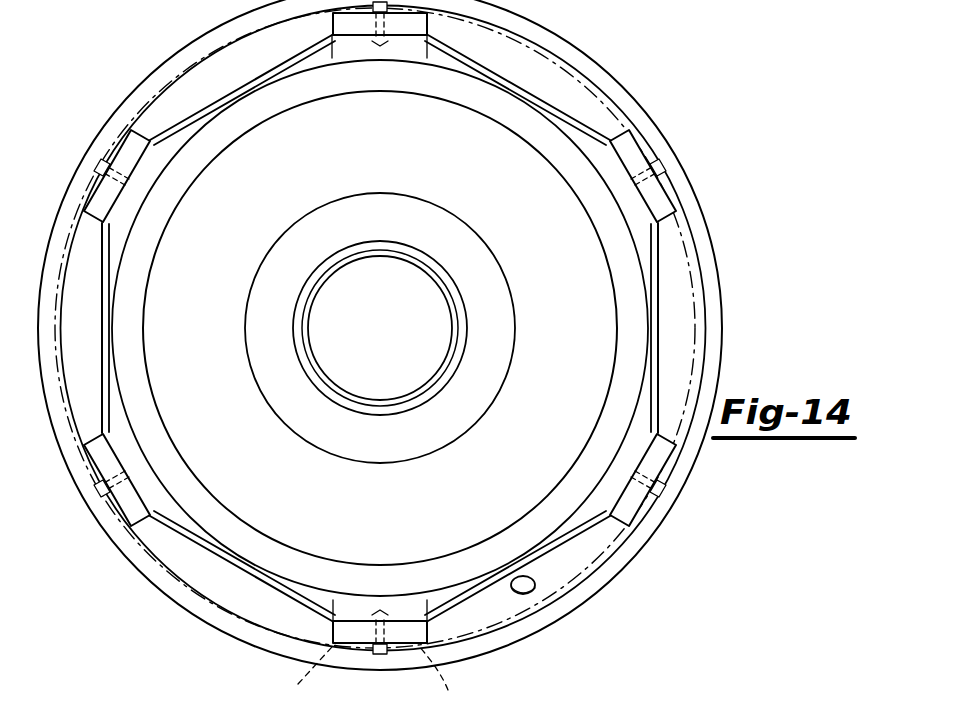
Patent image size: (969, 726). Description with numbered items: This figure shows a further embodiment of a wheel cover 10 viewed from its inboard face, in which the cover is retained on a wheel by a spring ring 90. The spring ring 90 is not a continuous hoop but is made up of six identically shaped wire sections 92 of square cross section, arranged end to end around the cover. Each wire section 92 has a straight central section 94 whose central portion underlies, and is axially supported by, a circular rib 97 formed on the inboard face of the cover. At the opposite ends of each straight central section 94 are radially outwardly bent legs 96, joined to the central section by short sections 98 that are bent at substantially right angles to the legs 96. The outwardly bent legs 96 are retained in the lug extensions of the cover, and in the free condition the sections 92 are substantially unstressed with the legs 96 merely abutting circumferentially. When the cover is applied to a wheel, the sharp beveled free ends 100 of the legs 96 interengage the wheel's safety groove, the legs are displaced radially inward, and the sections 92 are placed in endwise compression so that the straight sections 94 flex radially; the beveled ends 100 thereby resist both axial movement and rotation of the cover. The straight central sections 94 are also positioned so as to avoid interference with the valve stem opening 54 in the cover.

The housing 10 is at (656, 578).
The valve stem opening 54 is at (535, 594).
The spring ring 90 is at (442, 362).
The wire section 92 is at (173, 127).
The straight central section 94 is at (552, 106).
The radially outwardly bent leg 96 is at (108, 510).
The circular rib 97 is at (120, 393).
The short section 98 is at (142, 487).
The sharp beveled free end 100 is at (380, 656).